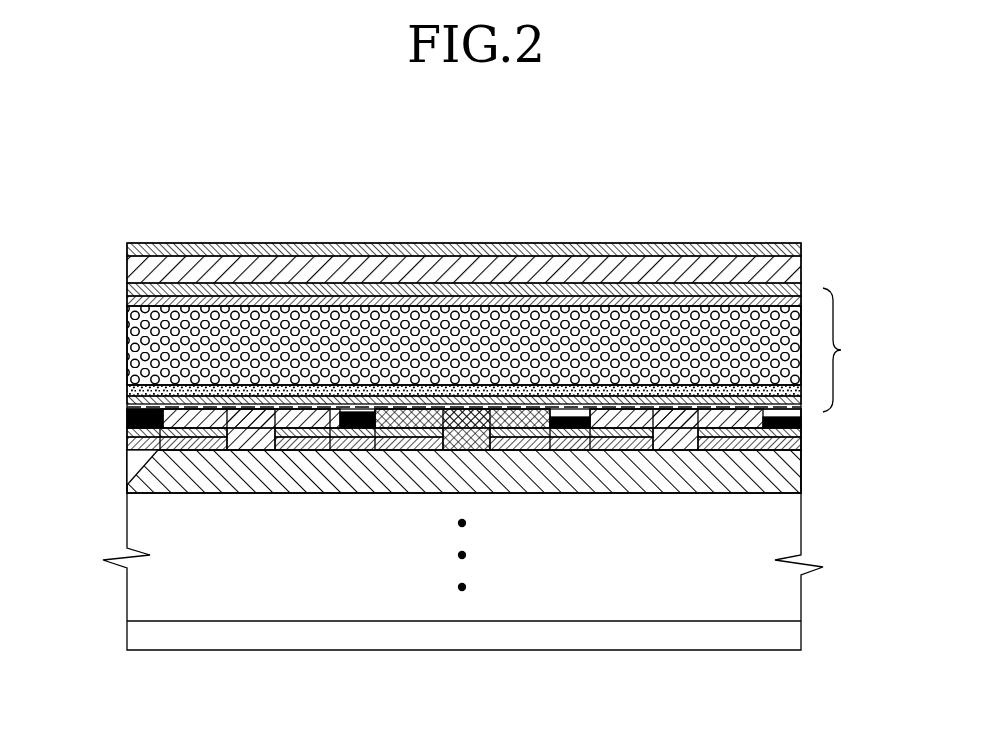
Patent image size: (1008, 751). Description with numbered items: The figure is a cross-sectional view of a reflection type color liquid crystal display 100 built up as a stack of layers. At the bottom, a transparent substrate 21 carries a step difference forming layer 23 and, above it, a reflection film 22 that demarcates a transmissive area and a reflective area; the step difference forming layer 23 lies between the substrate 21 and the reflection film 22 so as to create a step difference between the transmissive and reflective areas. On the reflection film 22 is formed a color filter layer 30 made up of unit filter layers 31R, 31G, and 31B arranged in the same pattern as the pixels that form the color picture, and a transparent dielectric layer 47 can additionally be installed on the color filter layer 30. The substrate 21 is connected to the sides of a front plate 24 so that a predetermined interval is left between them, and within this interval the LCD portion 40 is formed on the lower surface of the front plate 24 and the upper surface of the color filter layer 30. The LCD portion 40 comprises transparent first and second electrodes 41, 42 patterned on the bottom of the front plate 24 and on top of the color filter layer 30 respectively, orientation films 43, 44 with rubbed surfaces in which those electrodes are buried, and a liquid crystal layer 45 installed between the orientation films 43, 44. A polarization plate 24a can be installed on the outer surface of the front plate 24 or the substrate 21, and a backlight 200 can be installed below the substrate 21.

The reflection type liquid crystal display 100 is at (170, 228).
The backlight 200 is at (785, 639).
The transparent substrate 21 is at (801, 470).
The reflection film 22 is at (801, 436).
The step difference forming layer 23 is at (801, 448).
The front plate 24 is at (801, 279).
The polarization plate 24a is at (801, 250).
The color filter layer 30 is at (127, 480).
The unit filter layer 31R is at (285, 450).
The unit filter layer 31G is at (513, 450).
The unit filter layer 31B is at (728, 450).
The LCD portion 40 is at (848, 350).
The first electrode 41 is at (127, 283).
The second electrode 42 is at (180, 378).
The orientation film 43 is at (127, 300).
The orientation film 44 is at (127, 392).
The liquid crystal layer 45 is at (138, 328).
The transparent dielectric layer 47 is at (127, 404).